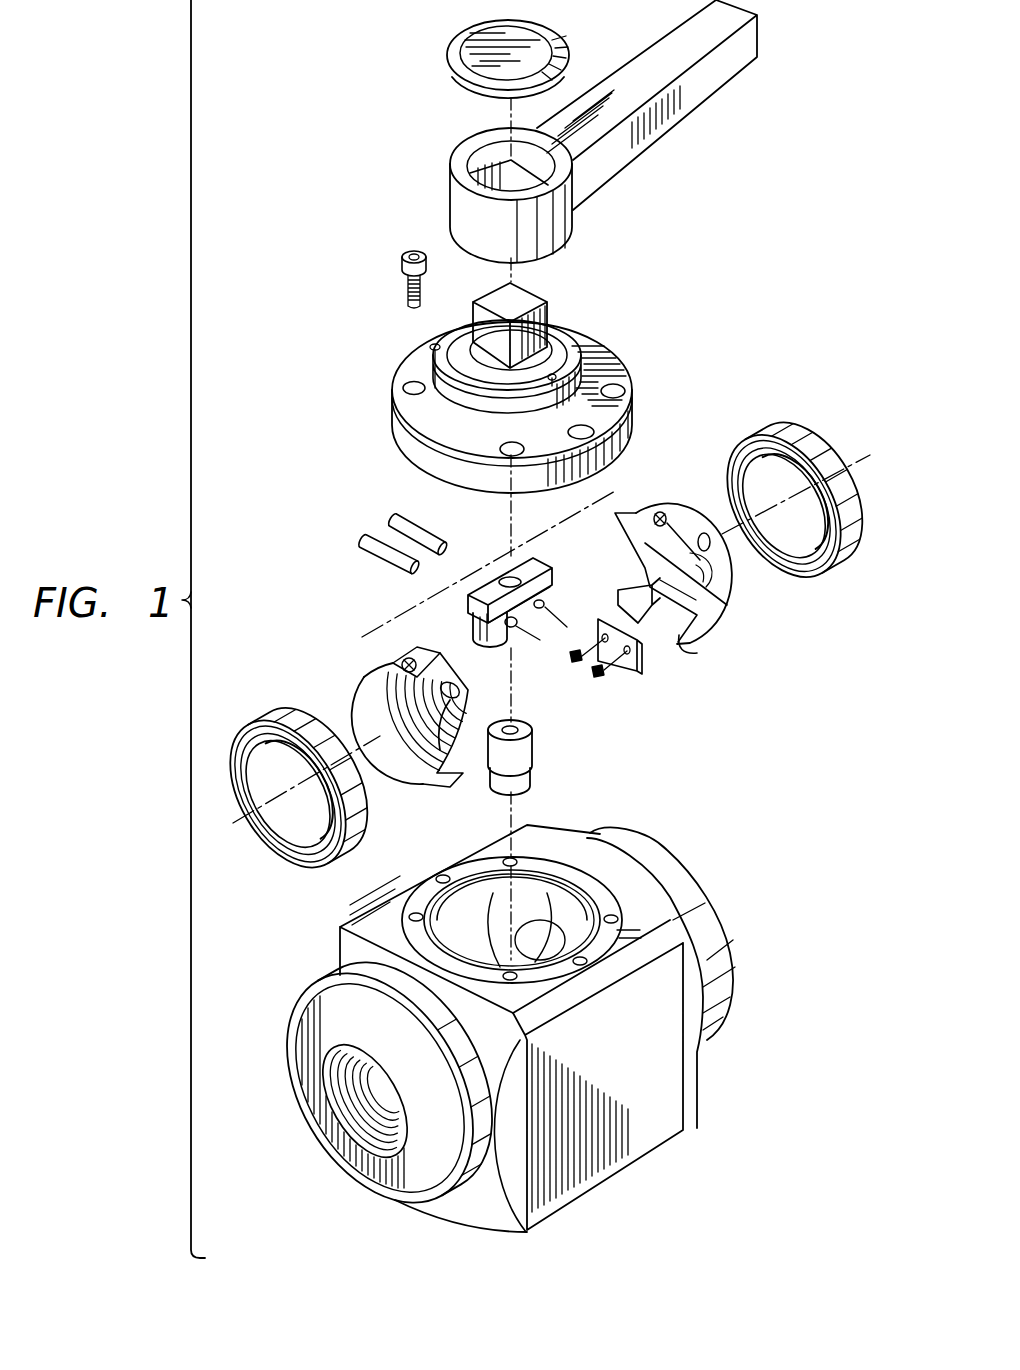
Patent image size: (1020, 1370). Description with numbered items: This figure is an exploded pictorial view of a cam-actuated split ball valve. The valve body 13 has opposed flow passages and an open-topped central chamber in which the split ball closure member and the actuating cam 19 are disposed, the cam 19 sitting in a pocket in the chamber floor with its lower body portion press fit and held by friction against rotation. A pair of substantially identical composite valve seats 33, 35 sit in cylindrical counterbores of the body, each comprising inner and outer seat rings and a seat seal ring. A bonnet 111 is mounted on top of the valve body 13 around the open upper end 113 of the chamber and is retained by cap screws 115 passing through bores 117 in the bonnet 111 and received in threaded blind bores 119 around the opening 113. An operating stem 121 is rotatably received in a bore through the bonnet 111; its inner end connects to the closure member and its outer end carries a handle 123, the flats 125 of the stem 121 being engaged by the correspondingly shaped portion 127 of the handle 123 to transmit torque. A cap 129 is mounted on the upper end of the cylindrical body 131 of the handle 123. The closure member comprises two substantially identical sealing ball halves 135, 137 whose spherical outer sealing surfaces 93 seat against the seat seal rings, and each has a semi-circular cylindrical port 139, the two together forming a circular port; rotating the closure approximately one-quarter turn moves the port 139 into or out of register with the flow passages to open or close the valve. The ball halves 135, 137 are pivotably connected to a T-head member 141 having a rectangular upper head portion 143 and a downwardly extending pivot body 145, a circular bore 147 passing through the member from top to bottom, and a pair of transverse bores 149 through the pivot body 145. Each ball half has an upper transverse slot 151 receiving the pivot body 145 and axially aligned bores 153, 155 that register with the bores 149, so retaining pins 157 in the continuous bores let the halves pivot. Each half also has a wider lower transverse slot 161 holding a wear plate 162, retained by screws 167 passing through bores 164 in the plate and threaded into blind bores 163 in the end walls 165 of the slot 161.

The body 13 is at (662, 1140).
The actuating cam 19 is at (535, 743).
The composite valve seat 33 is at (278, 705).
The composite valve seat 35 is at (773, 420).
The outer sealing surfaces 93 is at (367, 690).
The bonnet 111 is at (597, 355).
The open upper end 113 is at (432, 908).
The cap screws 115 is at (400, 262).
The bores 117 is at (402, 368).
The threaded blind bores 119 is at (443, 877).
The operating stem 121 is at (527, 295).
The handle 123 is at (685, 32).
The flats 125 is at (540, 317).
The correspondingly shaped portion 127 is at (490, 177).
The cap 129 is at (462, 33).
The cylindrical body 131 is at (465, 142).
The sealing ball half 135 is at (368, 663).
The sealing ball half 137 is at (723, 615).
The semi-circular cylindrical port 139 is at (717, 599).
The T-head member 141 is at (550, 593).
The upper head portion 143 is at (547, 567).
The pivot body 145 is at (502, 644).
The circular bore 147 is at (500, 577).
The transverse bores 149 is at (545, 608).
The upper transverse slot 151 is at (417, 652).
The bore 153 is at (415, 663).
The bore 155 is at (452, 683).
The retaining pins 157 is at (370, 530).
The lower transverse slot 161 is at (678, 637).
The wear plate 162 is at (626, 656).
The threaded blind bores 163 is at (642, 565).
The bores 164 is at (572, 662).
The end walls 165 is at (672, 627).
The screws 167 is at (597, 677).